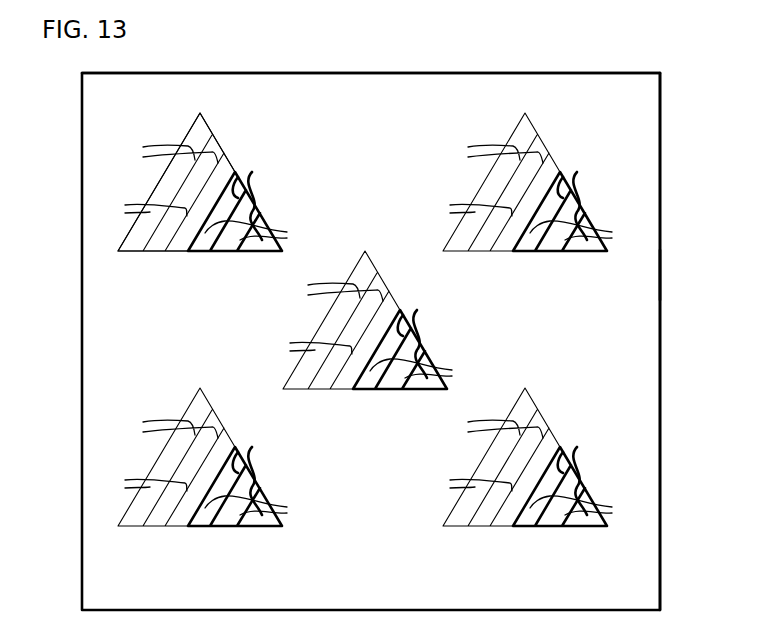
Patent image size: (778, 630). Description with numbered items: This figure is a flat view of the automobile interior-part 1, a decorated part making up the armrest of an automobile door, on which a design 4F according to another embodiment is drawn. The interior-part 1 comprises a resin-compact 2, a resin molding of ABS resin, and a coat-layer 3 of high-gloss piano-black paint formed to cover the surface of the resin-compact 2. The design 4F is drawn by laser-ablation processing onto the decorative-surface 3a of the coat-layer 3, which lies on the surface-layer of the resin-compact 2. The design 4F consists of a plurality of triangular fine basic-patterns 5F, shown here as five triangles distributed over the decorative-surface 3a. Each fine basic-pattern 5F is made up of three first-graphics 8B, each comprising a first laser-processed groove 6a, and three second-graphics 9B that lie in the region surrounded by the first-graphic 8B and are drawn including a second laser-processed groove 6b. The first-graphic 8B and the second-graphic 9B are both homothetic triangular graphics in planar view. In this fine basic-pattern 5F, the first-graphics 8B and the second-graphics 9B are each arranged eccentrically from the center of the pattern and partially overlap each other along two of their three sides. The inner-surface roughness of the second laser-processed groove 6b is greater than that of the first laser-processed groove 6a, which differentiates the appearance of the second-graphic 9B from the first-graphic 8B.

The automobile interior-part 1 is at (680, 105).
The resin-compact 2 is at (662, 155).
The coat-layer 3 is at (657, 208).
The decorative-surface 3a is at (652, 273).
The design 4F is at (125, 130).
The fine basic-pattern 5F is at (331, 319).
The first laser-processed groove 6a is at (330, 286).
The second laser-processed groove 6b is at (397, 338).
The first-graphic 8B is at (303, 345).
The second-graphic 9B is at (422, 370).